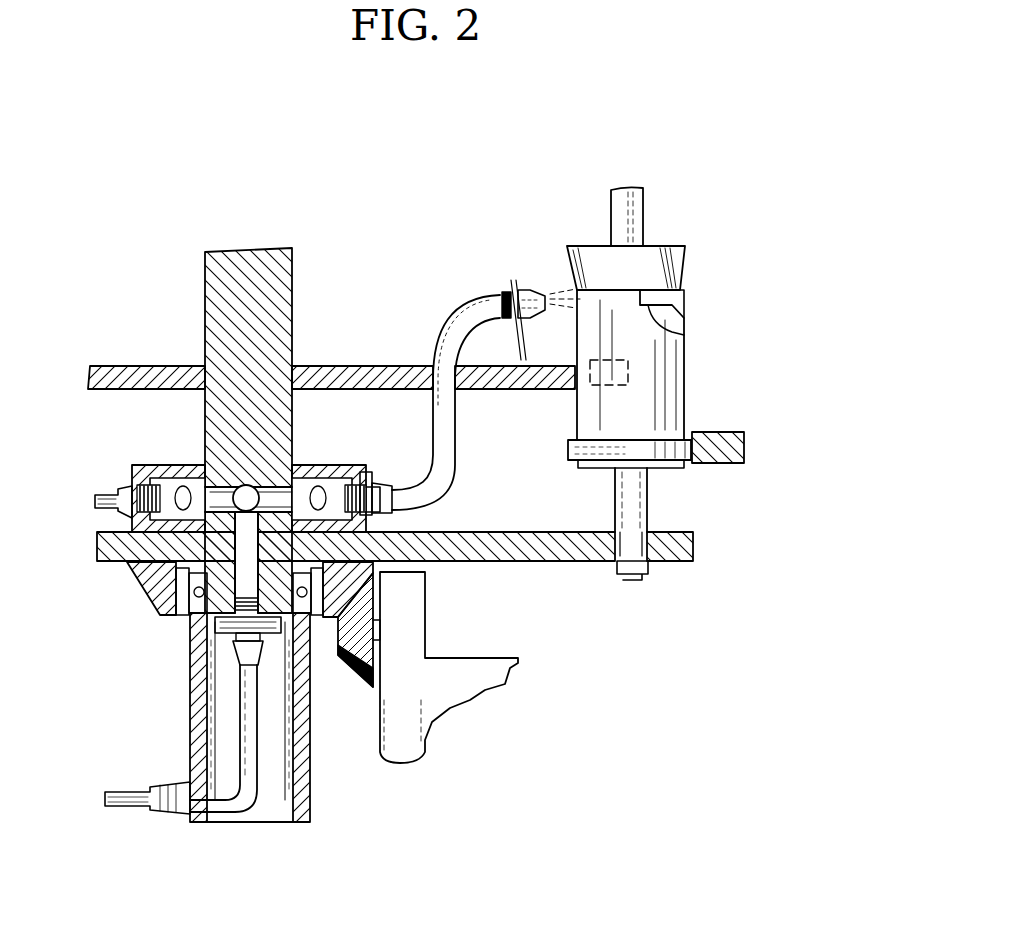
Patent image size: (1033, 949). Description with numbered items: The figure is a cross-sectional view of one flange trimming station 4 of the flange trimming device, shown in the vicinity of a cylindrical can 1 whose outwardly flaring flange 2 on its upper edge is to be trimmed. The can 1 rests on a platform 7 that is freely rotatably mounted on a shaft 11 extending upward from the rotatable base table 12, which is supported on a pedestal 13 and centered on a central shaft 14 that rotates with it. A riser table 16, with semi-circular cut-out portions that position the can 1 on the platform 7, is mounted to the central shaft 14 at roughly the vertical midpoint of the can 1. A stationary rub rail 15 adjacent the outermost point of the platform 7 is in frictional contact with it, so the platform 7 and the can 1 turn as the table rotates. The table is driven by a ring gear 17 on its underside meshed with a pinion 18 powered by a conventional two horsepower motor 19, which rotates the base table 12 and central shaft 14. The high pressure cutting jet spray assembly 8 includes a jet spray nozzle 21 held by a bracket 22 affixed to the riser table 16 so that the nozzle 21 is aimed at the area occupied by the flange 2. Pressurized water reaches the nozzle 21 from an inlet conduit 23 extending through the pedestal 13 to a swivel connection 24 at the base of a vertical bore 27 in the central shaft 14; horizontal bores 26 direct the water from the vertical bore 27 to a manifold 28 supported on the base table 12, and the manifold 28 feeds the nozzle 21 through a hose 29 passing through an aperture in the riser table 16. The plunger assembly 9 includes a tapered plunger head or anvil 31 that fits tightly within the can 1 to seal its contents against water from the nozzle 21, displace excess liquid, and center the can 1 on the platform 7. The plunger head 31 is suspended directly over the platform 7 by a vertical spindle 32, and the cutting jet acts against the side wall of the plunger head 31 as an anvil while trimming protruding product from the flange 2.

The cylindrical can 1 is at (686, 386).
The flange 2 is at (686, 300).
The flange trimming station 4 is at (704, 220).
The platform 7 is at (570, 450).
The high pressure cutting jet spray assembly 8 is at (418, 292).
The plunger assembly 9 is at (584, 242).
The shaft 11 is at (648, 508).
The rotatable base table 12 is at (560, 560).
The pedestal 13 is at (305, 756).
The central shaft 14 is at (292, 316).
The stationary rub rail 15 is at (716, 432).
The riser table 16 is at (386, 368).
The ring gear 17 is at (328, 612).
The pinion 18 is at (362, 662).
The motor 19 is at (413, 694).
The jet spray nozzle 21 is at (530, 293).
The bracket 22 is at (511, 282).
The inlet conduit 23 is at (258, 750).
The swivel connection 24 is at (240, 645).
The horizontal bore 26 is at (285, 497).
The vertical bore 27 is at (160, 592).
The manifold 28 is at (170, 466).
The hose 29 is at (112, 495).
The plunger head 31 is at (672, 255).
The vertical spindle 32 is at (644, 230).